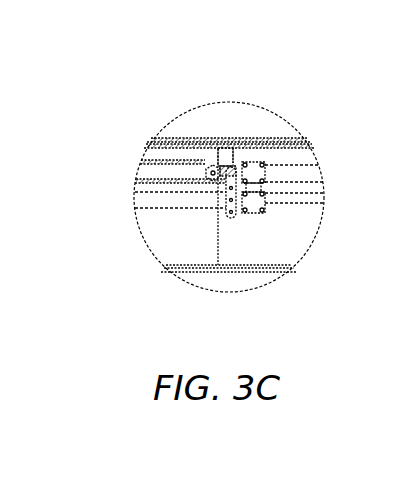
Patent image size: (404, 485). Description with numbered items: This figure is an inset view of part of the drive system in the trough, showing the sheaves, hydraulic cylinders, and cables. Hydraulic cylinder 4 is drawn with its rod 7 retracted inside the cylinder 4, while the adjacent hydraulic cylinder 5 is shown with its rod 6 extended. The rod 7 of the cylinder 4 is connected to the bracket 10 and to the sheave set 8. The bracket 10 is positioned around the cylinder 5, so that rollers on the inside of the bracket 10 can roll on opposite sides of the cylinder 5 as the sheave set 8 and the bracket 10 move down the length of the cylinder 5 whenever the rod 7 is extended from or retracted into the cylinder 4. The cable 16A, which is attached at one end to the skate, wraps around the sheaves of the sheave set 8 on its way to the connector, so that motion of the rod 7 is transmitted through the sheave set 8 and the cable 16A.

The cable 16A is at (173, 162).
The sheave set 8 is at (212, 164).
The rod 7 is at (235, 163).
The bracket 10 is at (230, 216).
The hydraulic cylinder 4 is at (280, 173).
The rod 6 is at (298, 202).
The hydraulic cylinder 5 is at (180, 198).